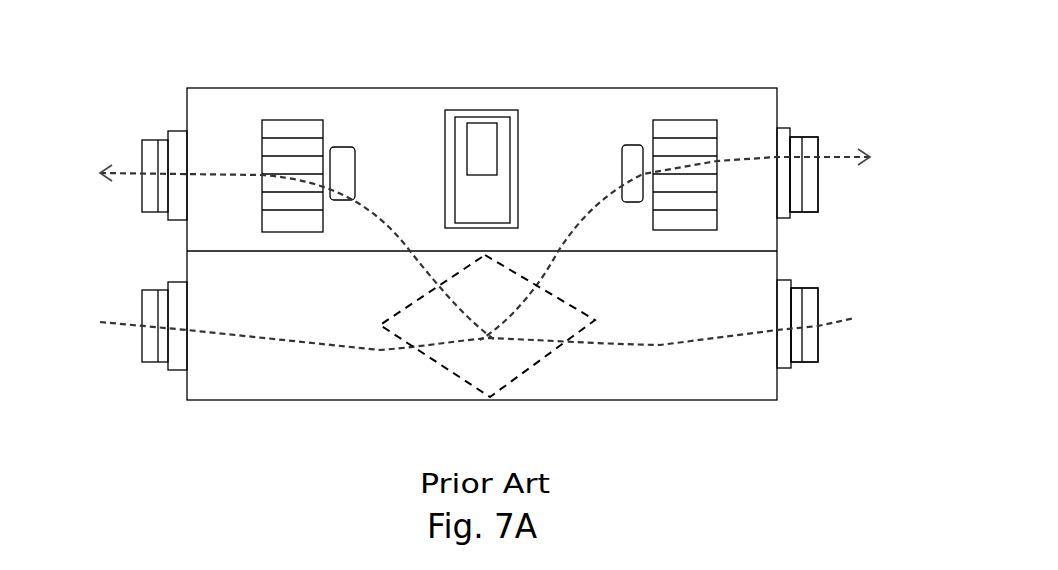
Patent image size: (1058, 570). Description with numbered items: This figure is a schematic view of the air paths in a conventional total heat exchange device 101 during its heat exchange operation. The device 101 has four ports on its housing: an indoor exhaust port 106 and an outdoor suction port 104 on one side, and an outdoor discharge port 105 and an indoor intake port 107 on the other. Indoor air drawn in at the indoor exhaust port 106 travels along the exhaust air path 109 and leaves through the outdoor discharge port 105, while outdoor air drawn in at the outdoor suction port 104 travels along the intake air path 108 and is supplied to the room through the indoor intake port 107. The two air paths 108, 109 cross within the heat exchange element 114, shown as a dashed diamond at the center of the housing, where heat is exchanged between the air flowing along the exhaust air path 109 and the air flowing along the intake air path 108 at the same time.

The total heat exchange device 101 is at (785, 92).
The outdoor suction port 104 is at (155, 313).
The outdoor discharge port 105 is at (142, 148).
The indoor exhaust port 106 is at (808, 340).
The indoor intake port 107 is at (810, 172).
The intake air path 108 is at (838, 148).
The exhaust air path 109 is at (833, 320).
The heat exchange element 114 is at (483, 362).